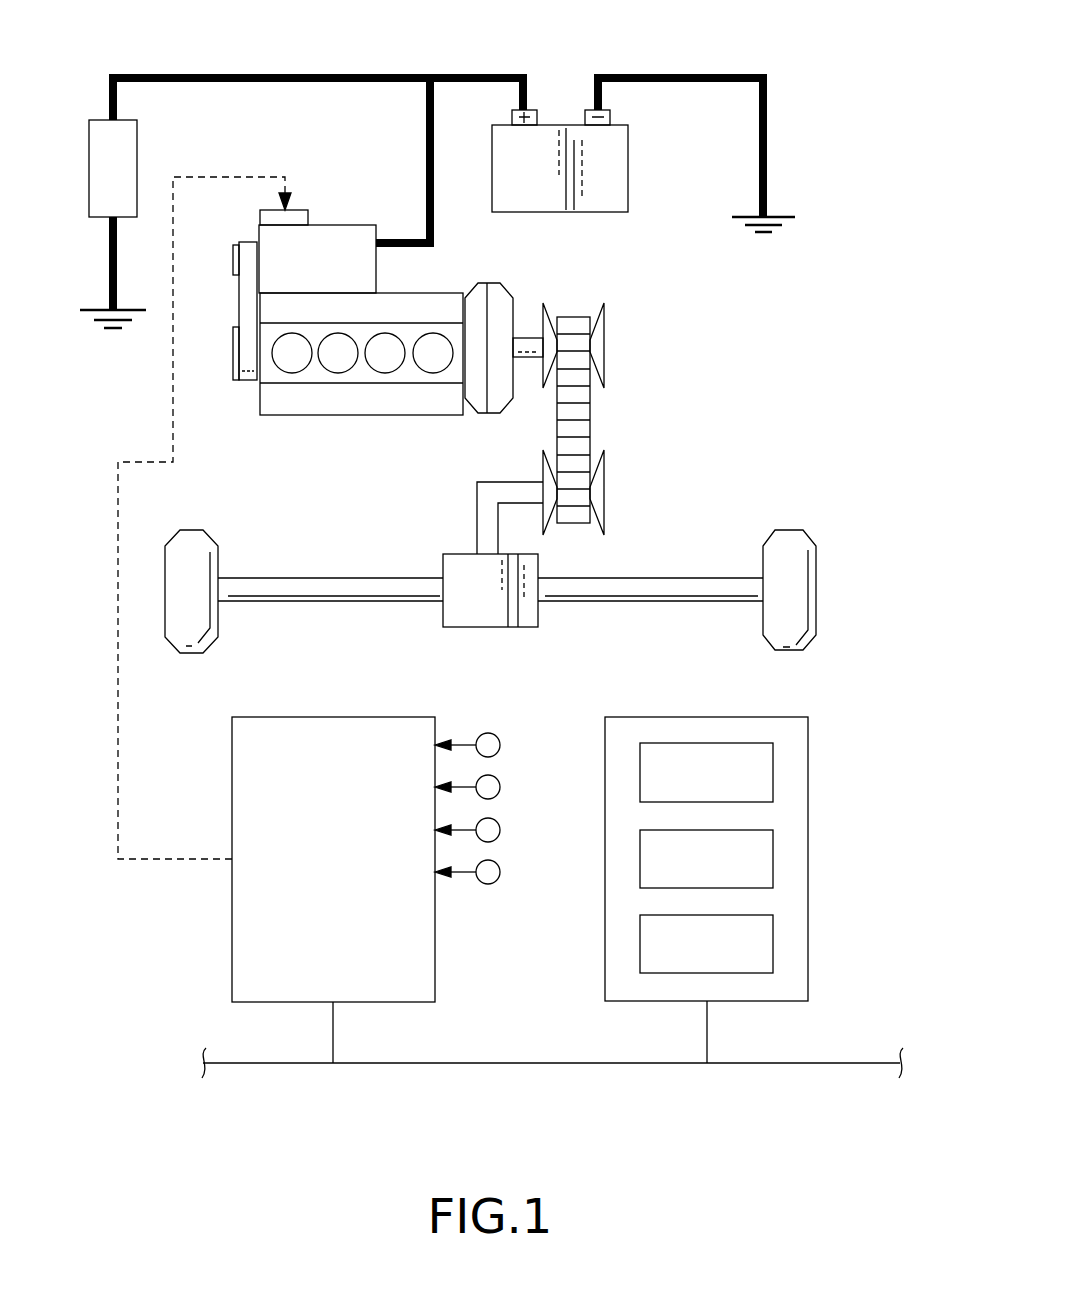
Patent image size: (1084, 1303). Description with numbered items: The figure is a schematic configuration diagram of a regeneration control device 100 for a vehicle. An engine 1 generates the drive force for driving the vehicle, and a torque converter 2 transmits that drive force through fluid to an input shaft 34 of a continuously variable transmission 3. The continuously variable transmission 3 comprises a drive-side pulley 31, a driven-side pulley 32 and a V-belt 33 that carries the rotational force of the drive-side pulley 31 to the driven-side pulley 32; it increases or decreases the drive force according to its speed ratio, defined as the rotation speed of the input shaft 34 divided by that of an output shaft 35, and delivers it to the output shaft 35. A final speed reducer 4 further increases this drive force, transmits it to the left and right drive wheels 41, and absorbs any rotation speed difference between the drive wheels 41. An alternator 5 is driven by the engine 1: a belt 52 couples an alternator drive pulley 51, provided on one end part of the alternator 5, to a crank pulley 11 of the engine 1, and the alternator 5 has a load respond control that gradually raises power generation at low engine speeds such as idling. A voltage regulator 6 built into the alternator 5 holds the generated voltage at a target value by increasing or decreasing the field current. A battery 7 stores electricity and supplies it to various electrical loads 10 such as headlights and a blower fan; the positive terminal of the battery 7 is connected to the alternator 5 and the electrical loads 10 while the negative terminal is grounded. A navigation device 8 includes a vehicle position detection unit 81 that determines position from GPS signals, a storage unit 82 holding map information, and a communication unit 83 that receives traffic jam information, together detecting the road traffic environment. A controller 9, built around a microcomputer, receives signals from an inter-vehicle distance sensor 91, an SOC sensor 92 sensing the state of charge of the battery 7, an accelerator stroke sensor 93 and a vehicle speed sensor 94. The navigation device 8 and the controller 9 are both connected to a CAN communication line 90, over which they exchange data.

The regeneration control device for vehicle 100 is at (813, 60).
The engine 1 is at (343, 415).
The torque converter 2 is at (505, 290).
The continuously variable transmission 3 is at (606, 387).
The drive-side pulley 31 is at (604, 310).
The driven-side pulley 32 is at (604, 478).
The V-belt 33 is at (590, 418).
The input shaft 34 is at (528, 357).
The output shaft 35 is at (508, 482).
The final speed reducer 4 is at (512, 627).
The drive wheels 41 is at (218, 548).
The alternator 5 is at (323, 225).
The alternator drive pulley 51 is at (233, 261).
The belt 52 is at (239, 306).
The voltage regulator 6 is at (260, 218).
The battery 7 is at (628, 158).
The navigation device 8 is at (730, 863).
The vehicle position detection unit 81 is at (773, 772).
The storage unit 82 is at (773, 856).
The communication unit 83 is at (773, 942).
The controller 9 is at (232, 742).
The CAN communication line 90 is at (567, 1063).
The inter-vehicle distance sensor 91 is at (500, 744).
The SOC sensor 92 is at (500, 786).
The accelerator stroke sensor 93 is at (500, 829).
The vehicle speed sensor 94 is at (500, 871).
The electrical loads 10 is at (137, 133).
The crank pulley 11 is at (233, 353).